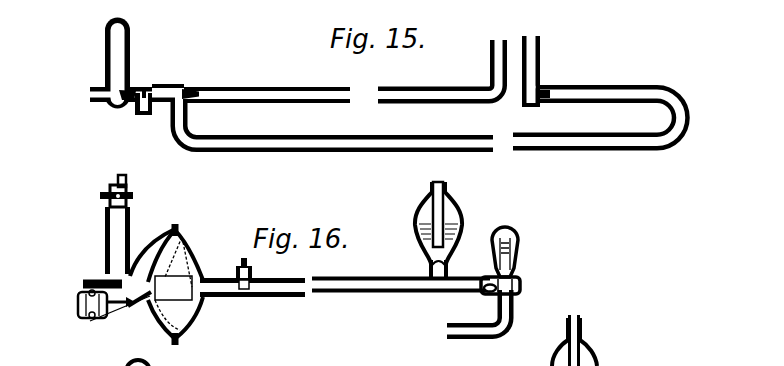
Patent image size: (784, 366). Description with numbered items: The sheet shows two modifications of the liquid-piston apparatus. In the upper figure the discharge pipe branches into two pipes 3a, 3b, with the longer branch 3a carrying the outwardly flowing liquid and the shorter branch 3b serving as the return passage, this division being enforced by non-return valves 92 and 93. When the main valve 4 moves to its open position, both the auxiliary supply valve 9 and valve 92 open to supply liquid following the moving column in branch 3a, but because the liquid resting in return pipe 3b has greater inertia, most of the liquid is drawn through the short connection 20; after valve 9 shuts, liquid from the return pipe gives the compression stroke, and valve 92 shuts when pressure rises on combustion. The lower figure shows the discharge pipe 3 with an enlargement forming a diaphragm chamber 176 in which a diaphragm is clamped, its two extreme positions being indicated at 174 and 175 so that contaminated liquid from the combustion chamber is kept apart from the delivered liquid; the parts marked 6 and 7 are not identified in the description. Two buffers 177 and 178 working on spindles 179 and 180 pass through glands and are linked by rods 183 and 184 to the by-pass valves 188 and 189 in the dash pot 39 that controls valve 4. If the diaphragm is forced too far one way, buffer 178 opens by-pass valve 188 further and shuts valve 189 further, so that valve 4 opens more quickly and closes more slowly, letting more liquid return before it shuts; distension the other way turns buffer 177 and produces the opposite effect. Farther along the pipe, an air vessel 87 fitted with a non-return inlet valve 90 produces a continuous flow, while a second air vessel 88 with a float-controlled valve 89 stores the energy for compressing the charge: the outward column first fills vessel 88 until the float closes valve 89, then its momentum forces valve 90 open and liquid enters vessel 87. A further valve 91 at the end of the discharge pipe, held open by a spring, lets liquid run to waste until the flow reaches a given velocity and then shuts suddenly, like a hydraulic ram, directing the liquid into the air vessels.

In FIG. 15, the discharge pipe 3 is at (160, 84).
In FIG. 16, the discharge pipe 3 is at (283, 294).
In FIG. 15, the discharge branch pipe 3a is at (278, 152).
In FIG. 15, the return branch pipe 3b is at (269, 88).
In FIG. 15, the valve 4 is at (125, 102).
In FIG. 16, the vertical tube 6 is at (104, 232).
In FIG. 16, the tube fitting 7 is at (127, 193).
In FIG. 15, the auxiliary supply valve 9 is at (145, 90).
In FIG. 16, the auxiliary supply valve 9 is at (245, 289).
In FIG. 15, the short connection 20 is at (145, 116).
In FIG. 16, the short connection 20 is at (253, 268).
In FIG. 16, the dash pot 39 is at (80, 310).
In FIG. 16, the air vessel 87 is at (458, 200).
In FIG. 16, the second air vessel 88 is at (520, 247).
In FIG. 16, the float valve 89 is at (521, 280).
In FIG. 16, the non-return inlet valve 90 is at (431, 262).
In FIG. 16, the discharge end valve 91 is at (489, 292).
In FIG. 15, the non-return valve 92 is at (188, 89).
In FIG. 15, the non-return valve 93 is at (541, 87).
In FIG. 16, the diaphragm extreme position 174 is at (168, 258).
In FIG. 16, the diaphragm extreme position 175 is at (200, 262).
In FIG. 16, the diaphragm chamber 176 is at (158, 254).
In FIG. 16, the buffer 177 is at (145, 304).
In FIG. 16, the buffer 178 is at (173, 284).
In FIG. 16, the spindle 179 is at (173, 283).
In FIG. 16, the spindle 180 is at (200, 296).
In FIG. 16, the rod 183 is at (192, 322).
In FIG. 16, the rod 184 is at (117, 325).
In FIG. 16, the by-pass valve 188 is at (91, 319).
In FIG. 16, the by-pass valve 189 is at (88, 291).